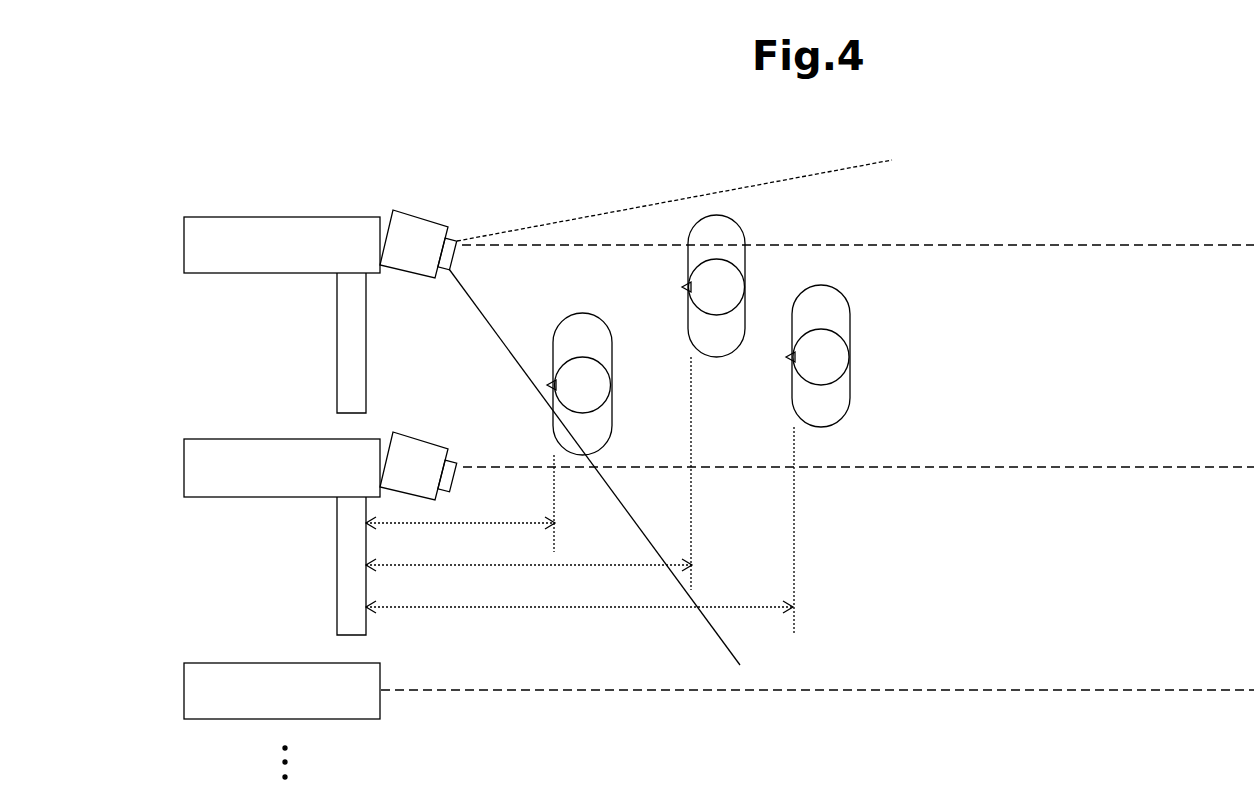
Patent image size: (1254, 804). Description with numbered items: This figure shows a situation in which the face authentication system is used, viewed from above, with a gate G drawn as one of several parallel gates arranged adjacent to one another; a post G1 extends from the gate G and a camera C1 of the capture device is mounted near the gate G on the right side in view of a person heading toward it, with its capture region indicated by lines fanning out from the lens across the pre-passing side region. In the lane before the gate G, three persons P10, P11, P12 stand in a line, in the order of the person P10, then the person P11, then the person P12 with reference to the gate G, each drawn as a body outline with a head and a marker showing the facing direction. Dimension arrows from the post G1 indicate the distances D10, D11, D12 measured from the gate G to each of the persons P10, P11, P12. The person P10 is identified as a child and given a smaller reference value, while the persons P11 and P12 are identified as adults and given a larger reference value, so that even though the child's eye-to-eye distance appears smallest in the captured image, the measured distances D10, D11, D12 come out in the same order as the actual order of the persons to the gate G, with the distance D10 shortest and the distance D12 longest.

The gate G is at (268, 216).
The post G1 is at (337, 307).
The camera C1 is at (421, 210).
The person P10 is at (612, 346).
The person P11 is at (745, 278).
The person P12 is at (850, 312).
The distance D10 is at (460, 535).
The distance D11 is at (529, 576).
The distance D12 is at (579, 619).